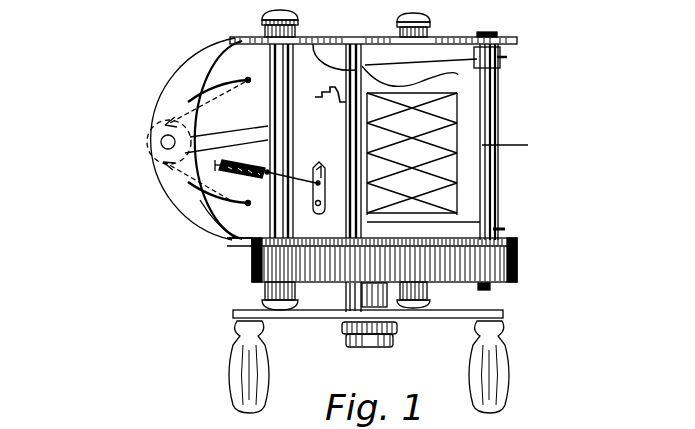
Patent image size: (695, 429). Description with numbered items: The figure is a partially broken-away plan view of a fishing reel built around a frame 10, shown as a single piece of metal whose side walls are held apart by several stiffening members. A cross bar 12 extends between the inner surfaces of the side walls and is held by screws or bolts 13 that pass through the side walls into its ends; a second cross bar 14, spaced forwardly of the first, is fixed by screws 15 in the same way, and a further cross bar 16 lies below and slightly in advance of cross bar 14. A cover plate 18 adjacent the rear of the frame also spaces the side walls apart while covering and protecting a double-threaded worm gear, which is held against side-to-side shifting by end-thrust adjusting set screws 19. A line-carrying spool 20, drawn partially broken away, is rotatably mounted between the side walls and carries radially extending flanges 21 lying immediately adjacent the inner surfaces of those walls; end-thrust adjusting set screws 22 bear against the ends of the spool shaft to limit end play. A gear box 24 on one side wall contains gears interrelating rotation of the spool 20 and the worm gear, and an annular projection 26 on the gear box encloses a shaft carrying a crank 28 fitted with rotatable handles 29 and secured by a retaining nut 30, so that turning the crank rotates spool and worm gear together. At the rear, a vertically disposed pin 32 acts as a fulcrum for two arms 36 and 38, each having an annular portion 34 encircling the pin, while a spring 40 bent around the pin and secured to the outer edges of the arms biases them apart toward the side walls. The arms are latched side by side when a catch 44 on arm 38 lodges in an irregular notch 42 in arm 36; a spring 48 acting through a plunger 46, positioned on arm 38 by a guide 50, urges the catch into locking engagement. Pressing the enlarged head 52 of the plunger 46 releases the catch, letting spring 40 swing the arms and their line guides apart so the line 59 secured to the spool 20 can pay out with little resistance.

The frame 10 is at (190, 72).
The cross bar 12 is at (313, 37).
The screws or bolts 13 is at (352, 37).
The second cross bar 14 is at (498, 203).
The screws 15 is at (490, 33).
The cross bar 16 is at (498, 177).
The cover plate 18 is at (287, 223).
The end-thrust adjusting set screws 19 is at (262, 27).
The line-carrying spool 20 is at (443, 137).
The radially extending flanges 21 is at (417, 60).
The end-thrust adjusting set screws 22 is at (430, 17).
The gear box 24 is at (515, 275).
The annular projection 26 is at (355, 303).
The crank 28 is at (442, 318).
The handles 29 is at (240, 378).
The retaining nut 30 is at (362, 346).
The pin 32 is at (163, 147).
The annular portion 34 is at (147, 141).
The arm 36 is at (220, 116).
The arm 38 is at (505, 229).
The spring 40 is at (246, 80).
The notch 42 is at (315, 97).
The catch 44 is at (255, 240).
The plunger 46 is at (275, 195).
The spring 48 is at (233, 210).
The guide 50 is at (250, 160).
The enlarged head 52 is at (214, 165).
The line 59 is at (528, 145).